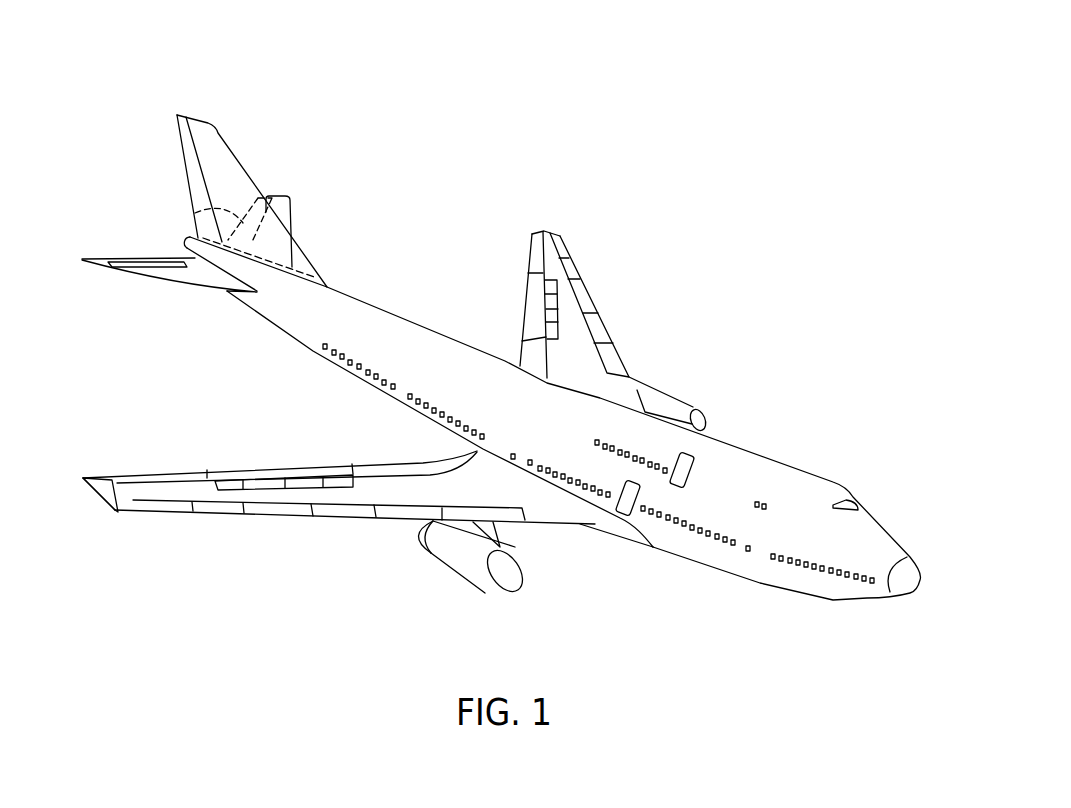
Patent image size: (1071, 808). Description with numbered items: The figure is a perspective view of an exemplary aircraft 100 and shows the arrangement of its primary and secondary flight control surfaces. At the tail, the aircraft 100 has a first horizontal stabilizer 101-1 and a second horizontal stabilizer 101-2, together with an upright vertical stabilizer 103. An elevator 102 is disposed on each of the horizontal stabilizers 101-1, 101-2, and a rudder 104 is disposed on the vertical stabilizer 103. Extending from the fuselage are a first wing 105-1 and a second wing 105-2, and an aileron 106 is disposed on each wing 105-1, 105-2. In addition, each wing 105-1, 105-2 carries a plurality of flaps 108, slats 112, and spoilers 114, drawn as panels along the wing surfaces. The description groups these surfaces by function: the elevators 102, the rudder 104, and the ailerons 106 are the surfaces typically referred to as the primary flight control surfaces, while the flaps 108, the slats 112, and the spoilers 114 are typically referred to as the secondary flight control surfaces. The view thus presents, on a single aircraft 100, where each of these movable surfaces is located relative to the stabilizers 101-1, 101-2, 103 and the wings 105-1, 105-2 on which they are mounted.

The aircraft 100 is at (663, 133).
The first horizontal stabilizer 101-1 is at (152, 283).
The second horizontal stabilizer 101-2 is at (295, 216).
The elevator 102 is at (196, 213).
The vertical stabilizer 103 is at (239, 157).
The rudder 104 is at (183, 133).
The first wing 105-1 is at (545, 505).
The second wing 105-2 is at (625, 396).
The aileron 106 is at (137, 480).
The flaps 108 is at (380, 471).
The slats 112 is at (393, 518).
The spoilers 114 is at (263, 484).